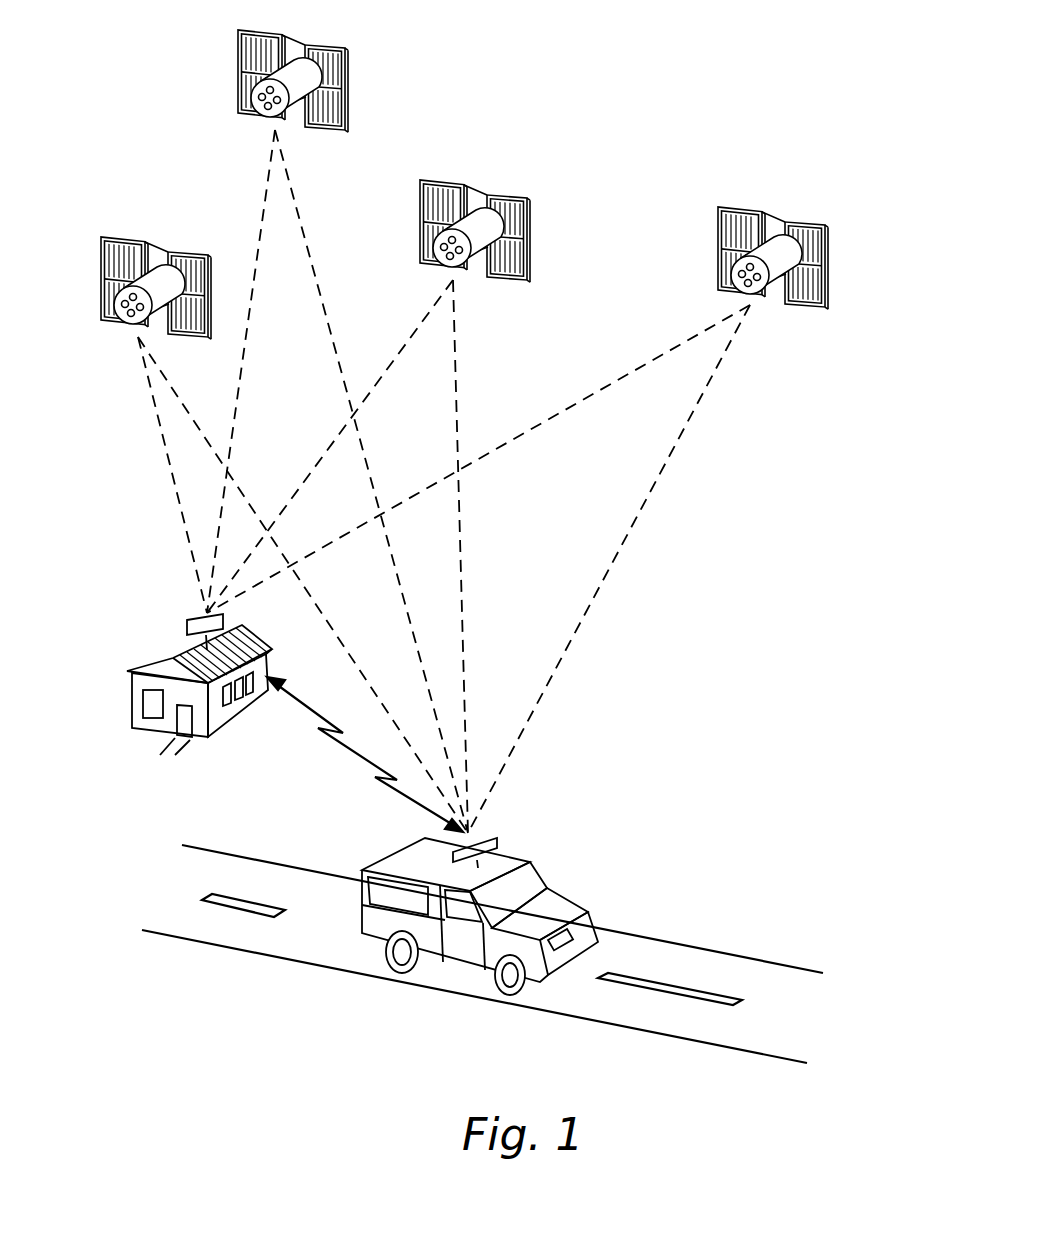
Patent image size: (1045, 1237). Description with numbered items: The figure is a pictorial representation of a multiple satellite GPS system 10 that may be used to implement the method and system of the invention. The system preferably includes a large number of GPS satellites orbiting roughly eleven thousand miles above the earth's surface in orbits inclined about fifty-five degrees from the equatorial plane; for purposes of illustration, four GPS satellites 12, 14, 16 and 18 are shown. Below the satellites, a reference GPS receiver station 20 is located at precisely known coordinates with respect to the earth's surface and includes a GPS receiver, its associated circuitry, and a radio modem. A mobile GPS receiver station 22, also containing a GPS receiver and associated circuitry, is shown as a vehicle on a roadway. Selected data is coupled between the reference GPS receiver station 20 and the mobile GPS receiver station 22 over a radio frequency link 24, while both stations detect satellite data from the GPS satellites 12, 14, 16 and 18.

The multiple satellite GPS system 10 is at (650, 110).
The GPS satellite 12 is at (100, 281).
The GPS satellite 14 is at (352, 94).
The GPS satellite 16 is at (532, 245).
The GPS satellite 18 is at (832, 275).
The reference GPS receiver station 20 is at (143, 660).
The mobile GPS receiver station 22 is at (542, 863).
The radio frequency link 24 is at (335, 742).